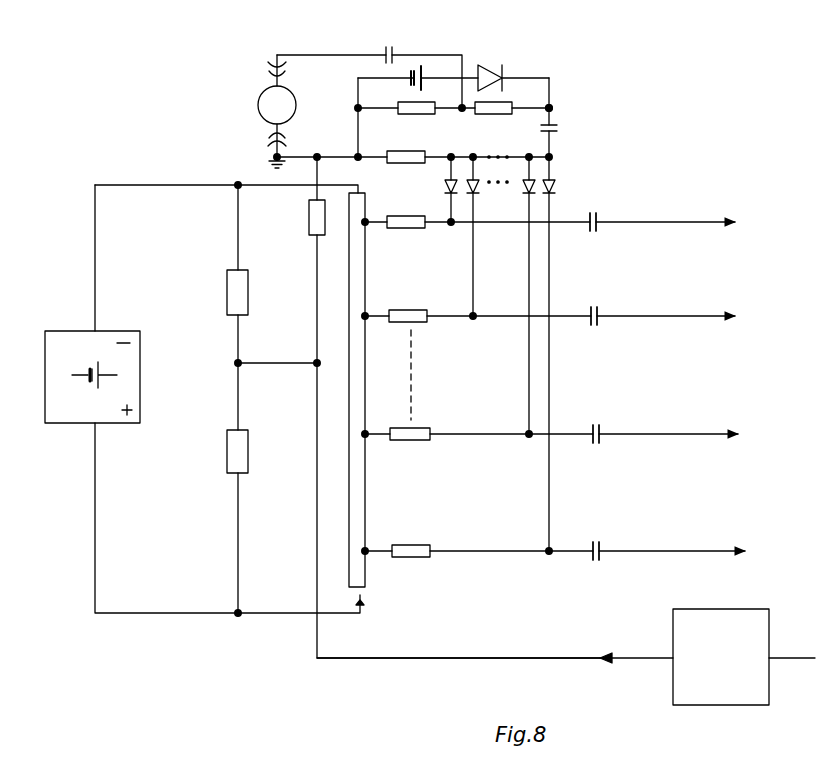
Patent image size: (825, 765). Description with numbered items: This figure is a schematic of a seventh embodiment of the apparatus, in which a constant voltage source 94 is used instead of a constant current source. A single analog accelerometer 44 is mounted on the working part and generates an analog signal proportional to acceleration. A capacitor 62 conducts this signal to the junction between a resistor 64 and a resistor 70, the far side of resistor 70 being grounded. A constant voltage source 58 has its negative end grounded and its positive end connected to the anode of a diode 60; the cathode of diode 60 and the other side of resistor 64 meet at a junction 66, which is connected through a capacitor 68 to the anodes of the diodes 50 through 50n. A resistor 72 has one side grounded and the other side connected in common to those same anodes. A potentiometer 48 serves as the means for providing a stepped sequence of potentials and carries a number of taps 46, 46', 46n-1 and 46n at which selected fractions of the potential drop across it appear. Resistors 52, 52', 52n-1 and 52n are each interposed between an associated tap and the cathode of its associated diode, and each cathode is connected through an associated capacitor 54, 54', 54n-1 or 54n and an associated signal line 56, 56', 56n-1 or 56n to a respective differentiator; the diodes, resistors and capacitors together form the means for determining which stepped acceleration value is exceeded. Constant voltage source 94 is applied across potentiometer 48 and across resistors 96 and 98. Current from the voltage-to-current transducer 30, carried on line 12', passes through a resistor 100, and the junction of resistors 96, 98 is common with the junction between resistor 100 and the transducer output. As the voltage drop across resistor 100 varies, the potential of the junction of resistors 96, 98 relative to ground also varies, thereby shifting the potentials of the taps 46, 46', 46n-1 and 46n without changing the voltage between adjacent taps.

The control line from current/voltage converter 12' is at (458, 633).
The voltage-to-current transducer 30 is at (730, 623).
The analog accelerometer 44 is at (294, 118).
The tap 46 is at (387, 238).
The tap 46' is at (387, 333).
The tap 46n-1 is at (368, 438).
The tap 46n is at (368, 555).
The potentiometer 48 is at (350, 393).
The diode 50 is at (444, 190).
The diode 50n is at (556, 185).
The resistor 52 is at (478, 205).
The resistor 52' is at (490, 347).
The resistor 52n-1 is at (398, 428).
The resistor 52n is at (406, 545).
The capacitor 54 is at (662, 200).
The capacitor 54' is at (663, 292).
The capacitor 54n-1 is at (598, 425).
The capacitor 54n is at (600, 542).
The signal line 56 is at (584, 239).
The signal line 56' is at (591, 343).
The signal line 56n-1 is at (606, 444).
The signal line 56n is at (606, 562).
The constant voltage source 58 is at (424, 78).
The diode 60 is at (492, 70).
The capacitor 62 is at (385, 61).
The resistor 64 is at (500, 112).
The junction 66 is at (551, 106).
The capacitor 68 is at (552, 127).
The resistor 70 is at (417, 112).
The resistor 72 is at (402, 158).
The constant voltage source 94 is at (63, 342).
The resistor 96 is at (240, 296).
The resistor 98 is at (240, 448).
The resistor 100 is at (310, 220).